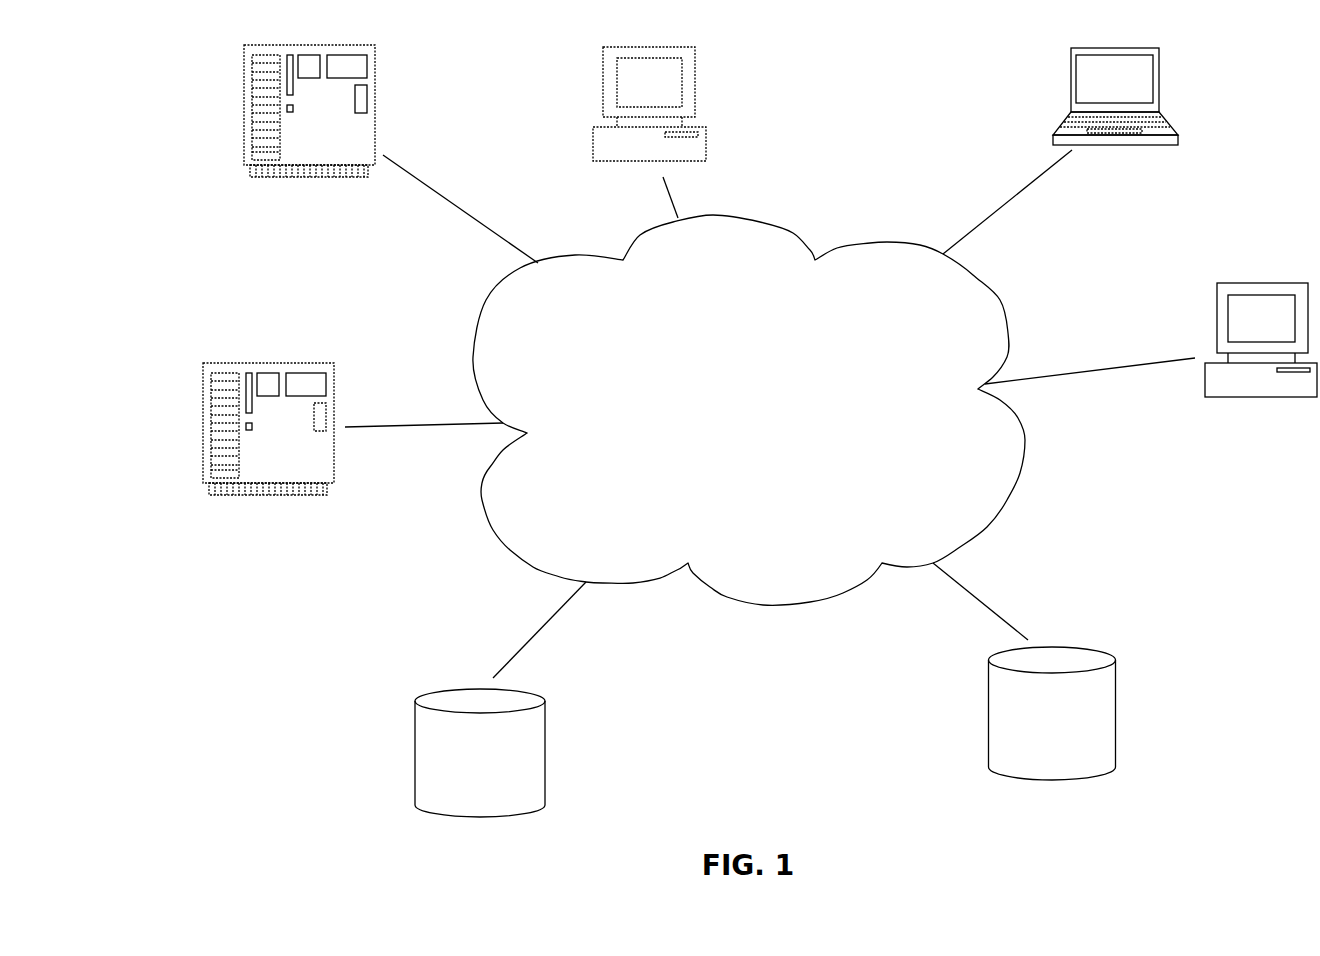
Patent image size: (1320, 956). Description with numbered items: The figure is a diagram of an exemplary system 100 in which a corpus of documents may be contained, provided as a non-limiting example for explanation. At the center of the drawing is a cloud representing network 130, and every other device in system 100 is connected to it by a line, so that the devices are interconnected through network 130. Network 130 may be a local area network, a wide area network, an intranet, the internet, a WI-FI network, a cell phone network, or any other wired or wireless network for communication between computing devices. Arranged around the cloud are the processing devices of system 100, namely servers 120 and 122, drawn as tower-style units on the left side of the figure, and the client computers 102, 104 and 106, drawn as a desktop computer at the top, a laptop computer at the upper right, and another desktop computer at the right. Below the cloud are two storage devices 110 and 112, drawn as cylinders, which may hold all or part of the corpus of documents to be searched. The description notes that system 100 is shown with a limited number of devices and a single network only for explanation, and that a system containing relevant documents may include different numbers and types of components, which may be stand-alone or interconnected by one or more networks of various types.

The system 100 is at (112, 85).
The client computer 102 is at (680, 132).
The client computer 104 is at (1075, 151).
The client computer 106 is at (1151, 364).
The storage device 110 is at (500, 711).
The storage device 112 is at (1024, 690).
The server 120 is at (391, 154).
The server 122 is at (353, 448).
The network 130 is at (749, 410).